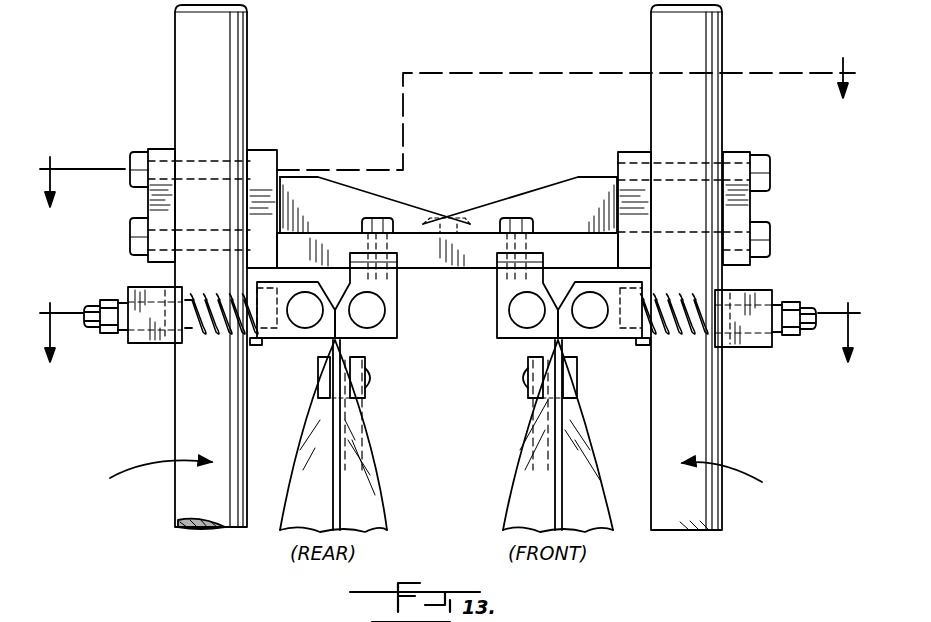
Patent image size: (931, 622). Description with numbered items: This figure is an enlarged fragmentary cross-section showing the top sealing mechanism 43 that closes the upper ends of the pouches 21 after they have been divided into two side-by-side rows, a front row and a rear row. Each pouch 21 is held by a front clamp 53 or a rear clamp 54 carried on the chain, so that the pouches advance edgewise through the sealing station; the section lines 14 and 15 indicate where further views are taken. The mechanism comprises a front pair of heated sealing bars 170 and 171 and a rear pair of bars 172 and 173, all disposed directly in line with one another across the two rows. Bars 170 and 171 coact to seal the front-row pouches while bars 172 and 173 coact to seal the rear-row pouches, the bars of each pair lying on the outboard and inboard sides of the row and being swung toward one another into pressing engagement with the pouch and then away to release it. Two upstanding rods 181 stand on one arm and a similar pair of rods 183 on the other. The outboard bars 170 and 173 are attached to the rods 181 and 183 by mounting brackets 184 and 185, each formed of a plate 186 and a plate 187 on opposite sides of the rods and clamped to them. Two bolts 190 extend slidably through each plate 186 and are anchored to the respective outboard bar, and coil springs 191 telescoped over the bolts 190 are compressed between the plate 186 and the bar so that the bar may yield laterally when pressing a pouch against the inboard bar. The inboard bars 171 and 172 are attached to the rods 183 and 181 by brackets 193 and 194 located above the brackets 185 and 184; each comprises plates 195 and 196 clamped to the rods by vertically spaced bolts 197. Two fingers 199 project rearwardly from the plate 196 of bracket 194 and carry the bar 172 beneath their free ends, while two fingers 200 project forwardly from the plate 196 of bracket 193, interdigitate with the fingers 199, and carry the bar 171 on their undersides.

The section line 14- 14 is at (440, 123).
The section line 15- 15 is at (446, 322).
The pouches 21 is at (505, 520).
The top sealing mechanism 43 is at (382, 100).
The front clamp 53 is at (525, 392).
The rear clamp 54 is at (368, 393).
The outboard sealing bar 170 is at (612, 338).
The inboard sealing bar 171 is at (498, 318).
The inboard sealing bar 172 is at (380, 338).
The outboard sealing bar 173 is at (302, 338).
The rods 181 is at (722, 498).
The rods 183 is at (180, 497).
The mounting bracket 184 is at (740, 352).
The mounting bracket 185 is at (170, 352).
The plate 186 is at (132, 290).
The plate 187 is at (255, 345).
The bolts 190 is at (126, 332).
The coil springs 191 is at (238, 296).
The bracket 193 is at (166, 128).
The bracket 194 is at (738, 135).
The plate 195 is at (156, 152).
The plate 196 is at (272, 153).
The bolts 197 is at (134, 242).
The fingers 199 is at (440, 268).
The fingers 200 is at (338, 222).